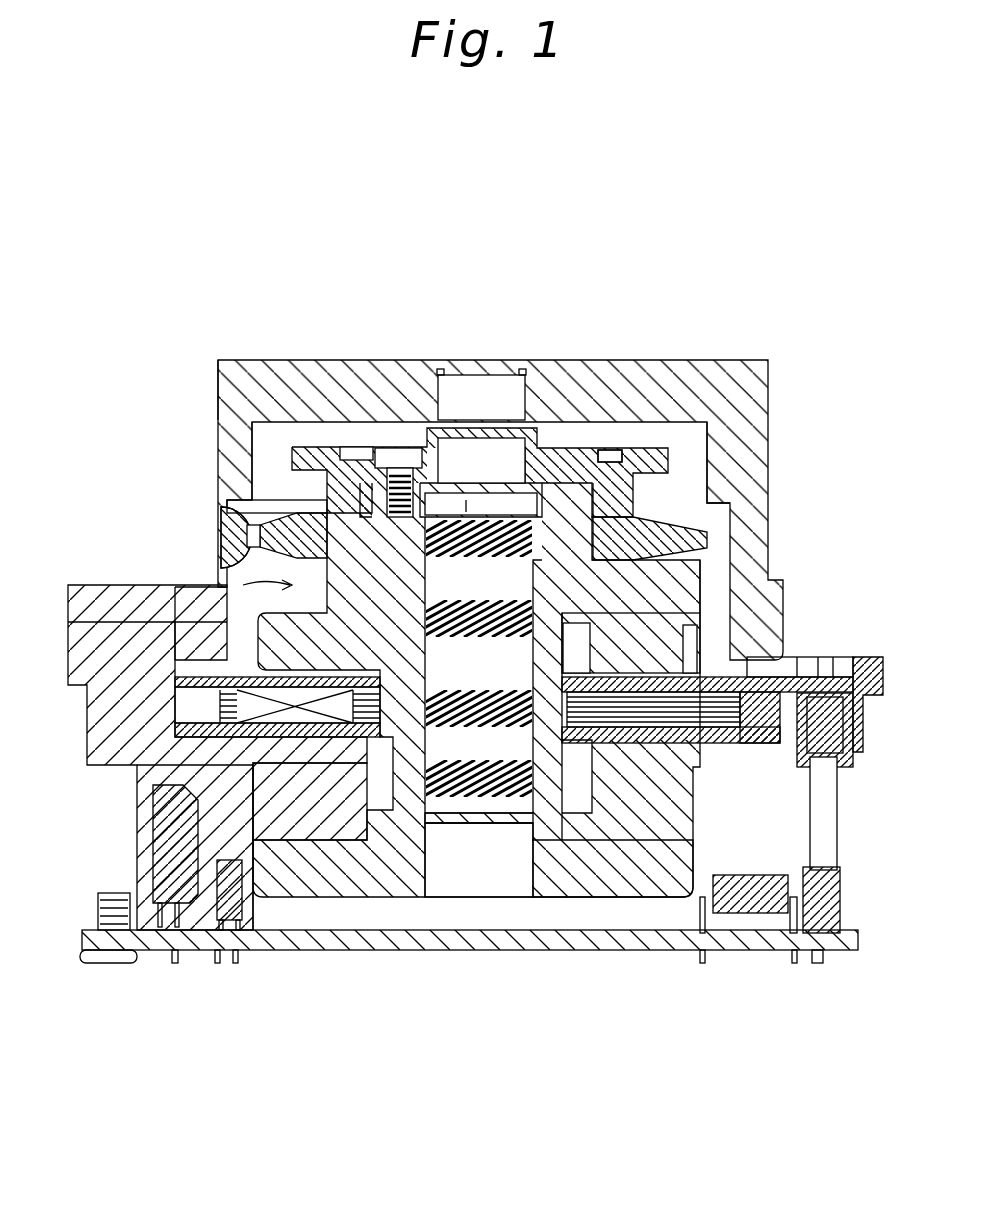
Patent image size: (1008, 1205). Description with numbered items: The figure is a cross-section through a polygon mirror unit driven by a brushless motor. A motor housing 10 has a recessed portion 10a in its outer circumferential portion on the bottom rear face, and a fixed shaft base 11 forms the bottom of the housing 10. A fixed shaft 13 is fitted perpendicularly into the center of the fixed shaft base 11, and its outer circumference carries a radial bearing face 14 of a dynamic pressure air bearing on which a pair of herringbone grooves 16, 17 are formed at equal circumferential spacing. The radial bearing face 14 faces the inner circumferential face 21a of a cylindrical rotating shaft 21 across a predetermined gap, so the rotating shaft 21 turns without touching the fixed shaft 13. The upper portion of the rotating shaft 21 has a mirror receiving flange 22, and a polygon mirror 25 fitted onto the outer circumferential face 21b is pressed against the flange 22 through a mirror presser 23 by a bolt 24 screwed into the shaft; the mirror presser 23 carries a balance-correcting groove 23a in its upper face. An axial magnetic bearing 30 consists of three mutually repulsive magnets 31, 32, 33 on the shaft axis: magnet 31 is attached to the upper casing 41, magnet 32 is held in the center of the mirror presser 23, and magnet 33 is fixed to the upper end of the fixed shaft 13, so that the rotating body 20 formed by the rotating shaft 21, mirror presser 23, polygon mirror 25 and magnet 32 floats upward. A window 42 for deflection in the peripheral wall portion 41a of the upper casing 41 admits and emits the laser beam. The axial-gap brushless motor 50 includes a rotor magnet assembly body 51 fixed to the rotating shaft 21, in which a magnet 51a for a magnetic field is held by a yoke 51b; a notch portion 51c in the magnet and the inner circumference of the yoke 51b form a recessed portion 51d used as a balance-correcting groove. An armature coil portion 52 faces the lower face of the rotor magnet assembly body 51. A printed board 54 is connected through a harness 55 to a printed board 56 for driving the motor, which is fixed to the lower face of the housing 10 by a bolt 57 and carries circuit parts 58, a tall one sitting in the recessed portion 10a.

The motor housing 10 is at (133, 648).
The recessed portion 10a is at (150, 790).
The fixed shaft base 11 is at (581, 892).
The fixed shaft 13 is at (458, 872).
The radial bearing face 14 is at (496, 800).
The herringbone groove 16 is at (482, 604).
The herringbone groove 17 is at (515, 604).
The rotating body 20 is at (214, 572).
The rotating shaft 21 is at (420, 772).
The inner circumferential face 21a is at (525, 668).
The outer circumferential face 21b is at (300, 445).
The mirror receiving flange 22 is at (700, 605).
The mirror presser 23 is at (660, 493).
The balance-correcting groove 23a is at (612, 440).
The bolt 24 is at (396, 446).
The polygon mirror 25 is at (650, 535).
The axial magnetic bearing 30 is at (517, 347).
The magnet 31 is at (495, 393).
The magnet 32 is at (600, 450).
The magnet 33 is at (466, 498).
The upper casing 41 is at (748, 400).
The peripheral wall portion 41a is at (216, 358).
The window for deflection 42 is at (214, 507).
The brushless motor 50 is at (318, 745).
The rotor magnet assembly body 51 is at (690, 650).
The magnet for a magnetic field 51a is at (735, 658).
The yoke 51b is at (715, 628).
The notch portion 51c is at (205, 650).
The recessed portion 51d is at (678, 650).
The armature coil portion 52 is at (238, 712).
The printed board 54 is at (212, 655).
The harness 55 is at (830, 805).
The printed board for driving the brushless motor 56 is at (263, 958).
The bolt 57 is at (102, 962).
The circuit parts 58 is at (166, 905).